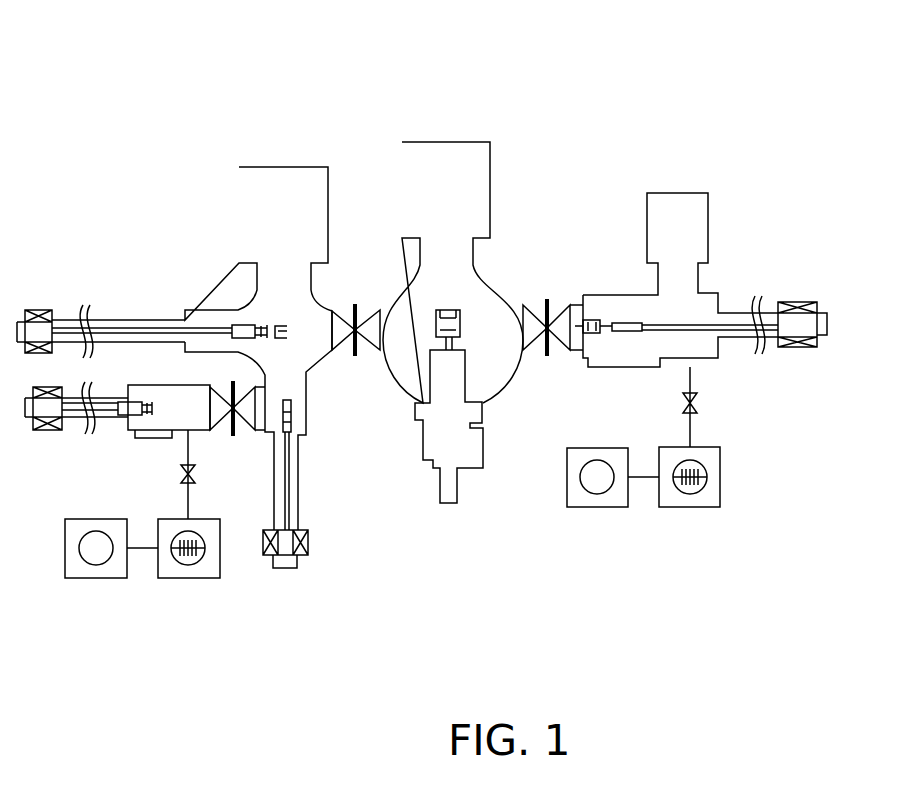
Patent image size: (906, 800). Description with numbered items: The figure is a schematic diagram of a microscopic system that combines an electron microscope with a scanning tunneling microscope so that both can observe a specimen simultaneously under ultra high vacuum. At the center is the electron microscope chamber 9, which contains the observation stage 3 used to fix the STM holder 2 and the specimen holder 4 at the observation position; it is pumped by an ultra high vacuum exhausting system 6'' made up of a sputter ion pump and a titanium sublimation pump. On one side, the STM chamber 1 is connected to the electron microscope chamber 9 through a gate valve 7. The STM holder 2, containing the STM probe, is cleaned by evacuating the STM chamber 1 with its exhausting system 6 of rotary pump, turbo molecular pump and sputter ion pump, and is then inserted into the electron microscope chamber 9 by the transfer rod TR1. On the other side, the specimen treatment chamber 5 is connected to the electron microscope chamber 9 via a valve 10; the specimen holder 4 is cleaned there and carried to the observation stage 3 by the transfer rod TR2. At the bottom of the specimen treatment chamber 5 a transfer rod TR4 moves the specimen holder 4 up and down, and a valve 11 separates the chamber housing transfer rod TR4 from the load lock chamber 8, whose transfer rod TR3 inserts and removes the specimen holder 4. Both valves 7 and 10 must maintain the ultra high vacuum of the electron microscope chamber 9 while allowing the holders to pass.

The STM chamber 1 is at (664, 188).
The STM holder 2 is at (592, 314).
The observation stage 3 is at (430, 336).
The specimen holder 4 is at (279, 320).
The specimen treatment chamber 5 is at (265, 160).
The ultra high vacuum exhausting system 6 is at (690, 387).
The ultra high vacuum exhausting system 6'' is at (536, 142).
The valve 7 is at (544, 362).
The load lock chamber 8 is at (143, 392).
The electron microscope chamber 9 is at (420, 138).
The valve 10 is at (357, 355).
The valve 11 is at (233, 433).
The transfer rod TR1 is at (798, 302).
The transfer rod TR2 is at (41, 308).
The transfer rod TR3 is at (27, 380).
The transfer rod TR4 is at (308, 551).